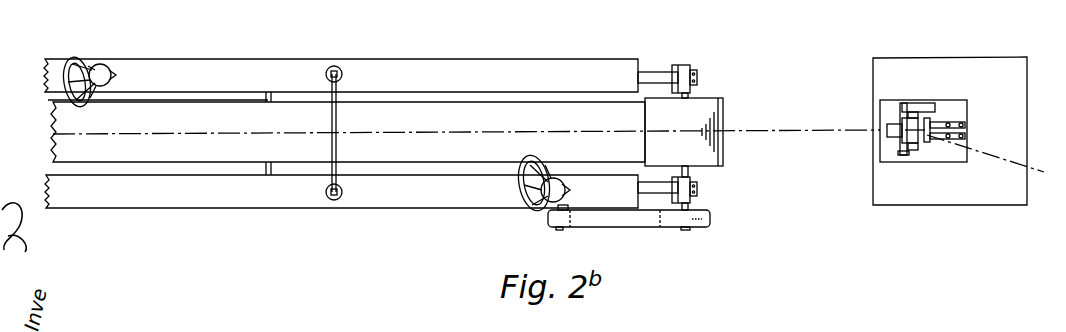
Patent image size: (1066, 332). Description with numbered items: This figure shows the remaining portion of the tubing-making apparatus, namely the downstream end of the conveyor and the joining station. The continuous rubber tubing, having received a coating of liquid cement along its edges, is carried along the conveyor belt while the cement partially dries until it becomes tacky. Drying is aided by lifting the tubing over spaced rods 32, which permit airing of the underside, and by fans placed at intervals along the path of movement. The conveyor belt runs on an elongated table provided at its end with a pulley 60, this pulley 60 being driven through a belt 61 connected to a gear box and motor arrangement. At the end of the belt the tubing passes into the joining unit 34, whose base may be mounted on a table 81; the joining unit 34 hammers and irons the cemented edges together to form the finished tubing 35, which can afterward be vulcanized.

The spaced rods 32 is at (340, 87).
The joining unit 34 is at (929, 100).
The finished tubing 35 is at (998, 158).
The pulley 60 is at (713, 96).
The belt 61 is at (633, 221).
The table 81 is at (873, 188).